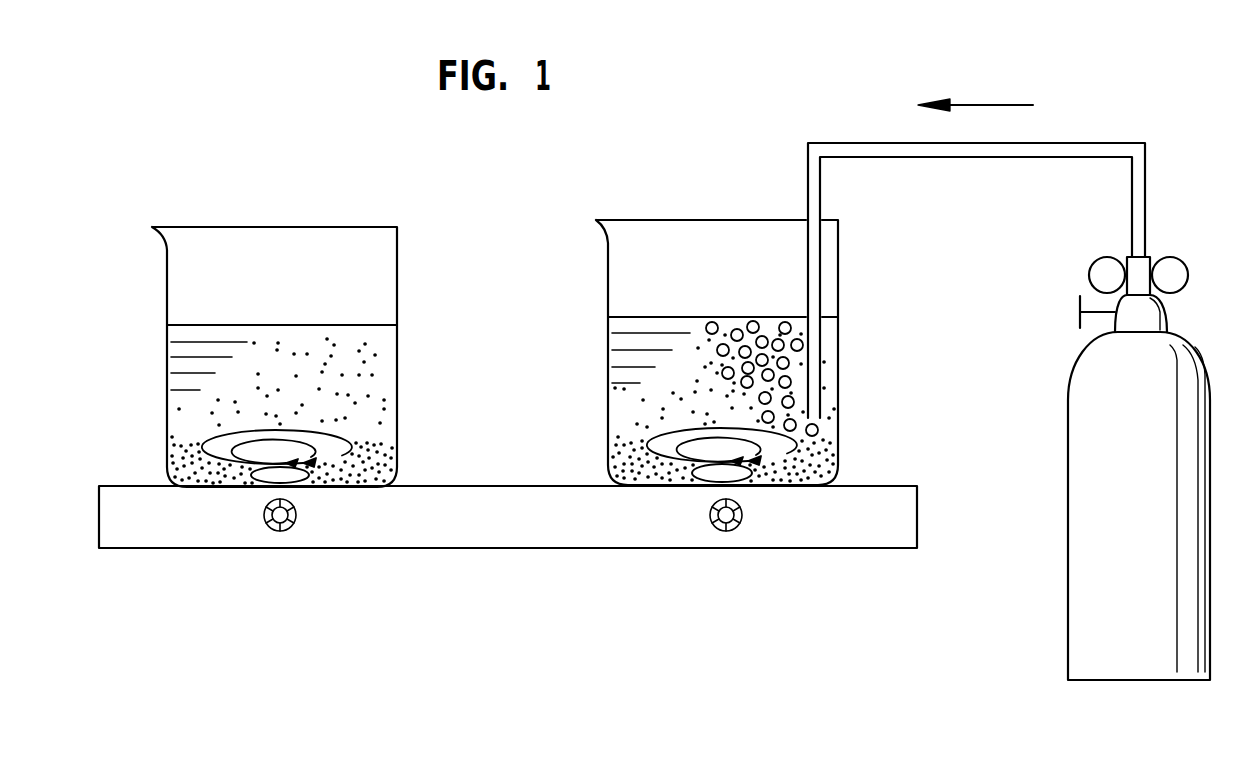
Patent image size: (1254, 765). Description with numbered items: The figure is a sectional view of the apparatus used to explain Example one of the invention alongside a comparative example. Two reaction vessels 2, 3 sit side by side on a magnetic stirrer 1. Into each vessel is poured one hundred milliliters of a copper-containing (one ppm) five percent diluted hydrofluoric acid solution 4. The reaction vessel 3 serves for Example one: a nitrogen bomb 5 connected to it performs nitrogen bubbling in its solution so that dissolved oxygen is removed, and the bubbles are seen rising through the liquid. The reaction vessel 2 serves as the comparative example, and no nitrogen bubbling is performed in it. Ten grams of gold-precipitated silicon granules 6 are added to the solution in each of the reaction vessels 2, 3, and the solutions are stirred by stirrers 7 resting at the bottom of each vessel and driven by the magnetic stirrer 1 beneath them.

The magnetic stirrer 1 is at (512, 549).
The reaction vessel 2 is at (166, 352).
The reaction vessel 3 is at (608, 340).
The copper-containing diluted hydrofluoric acid solution 4 is at (344, 333).
The nitrogen bomb 5 is at (1068, 412).
The gold-precipitated silicon granules 6 is at (349, 473).
The stirrer 7 is at (265, 479).